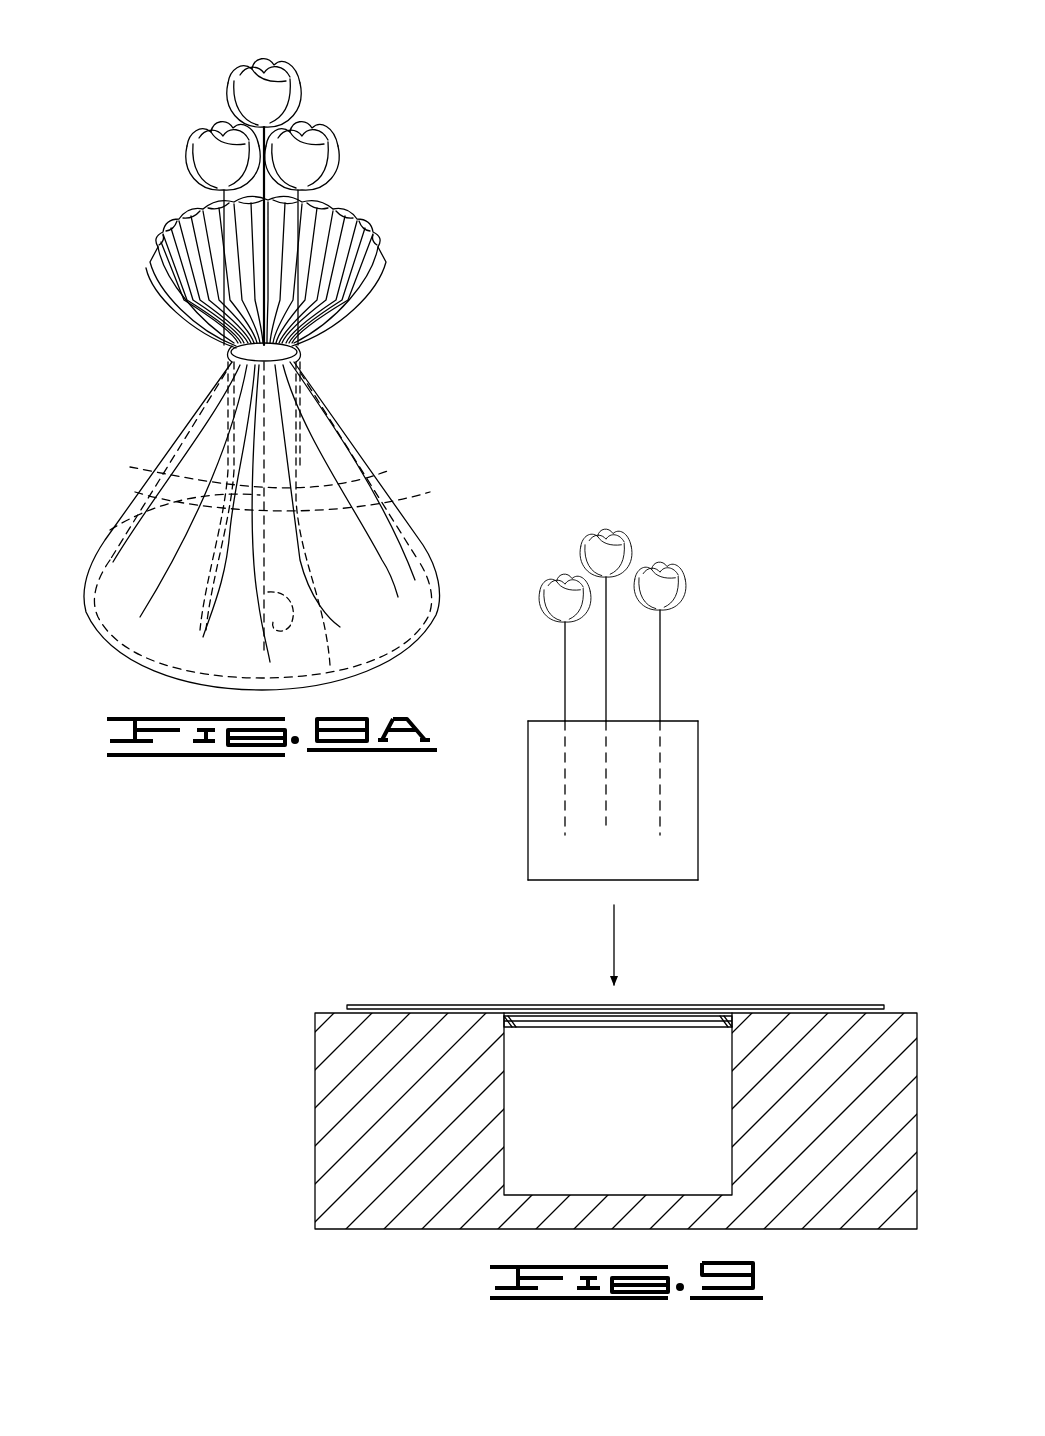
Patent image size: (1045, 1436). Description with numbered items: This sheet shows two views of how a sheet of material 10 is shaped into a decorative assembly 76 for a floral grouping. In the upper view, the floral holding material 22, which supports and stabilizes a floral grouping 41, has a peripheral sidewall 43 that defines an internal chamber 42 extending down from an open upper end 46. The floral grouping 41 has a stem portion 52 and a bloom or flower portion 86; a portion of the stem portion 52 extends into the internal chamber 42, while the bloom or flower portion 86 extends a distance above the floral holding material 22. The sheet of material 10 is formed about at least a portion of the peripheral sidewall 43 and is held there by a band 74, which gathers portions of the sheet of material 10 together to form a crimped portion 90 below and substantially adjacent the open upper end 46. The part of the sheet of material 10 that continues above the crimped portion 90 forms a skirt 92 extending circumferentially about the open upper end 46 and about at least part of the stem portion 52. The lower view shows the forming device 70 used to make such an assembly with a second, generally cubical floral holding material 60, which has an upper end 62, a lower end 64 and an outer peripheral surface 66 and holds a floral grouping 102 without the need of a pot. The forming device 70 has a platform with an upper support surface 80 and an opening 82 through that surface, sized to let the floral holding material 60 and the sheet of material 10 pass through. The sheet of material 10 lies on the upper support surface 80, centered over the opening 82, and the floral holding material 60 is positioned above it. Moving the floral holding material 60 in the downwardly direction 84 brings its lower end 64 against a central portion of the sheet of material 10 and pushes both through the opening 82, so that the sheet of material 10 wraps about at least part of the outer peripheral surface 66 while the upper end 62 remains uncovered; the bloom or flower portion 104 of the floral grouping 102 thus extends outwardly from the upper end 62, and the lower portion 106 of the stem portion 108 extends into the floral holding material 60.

In FIG. 9, the sheet of material 10 is at (798, 998).
In FIG. 8A, the floral holding material 22 is at (382, 478).
In FIG. 8A, the floral grouping 41 is at (309, 190).
In FIG. 8A, the internal chamber 42 is at (135, 492).
In FIG. 8A, the peripheral sidewall 43 is at (130, 467).
In FIG. 8A, the open upper end 46 is at (298, 362).
In FIG. 8A, the stem portion 52 is at (262, 250).
In FIG. 9, the floral holding material 60 is at (645, 797).
In FIG. 9, the upper end 62 is at (544, 720).
In FIG. 9, the lower end 64 is at (546, 881).
In FIG. 9, the outer peripheral surface 66 is at (699, 782).
In FIG. 9, the forming device 70 is at (313, 1080).
In FIG. 8A, the band 74 is at (216, 350).
In FIG. 8A, the decorative assembly 76 is at (275, 432).
In FIG. 9, the upper support surface 80 is at (315, 1012).
In FIG. 9, the opening 82 is at (505, 1100).
In FIG. 9, the downwardly direction 84 is at (613, 940).
In FIG. 8A, the bloom or flower portion 86 is at (292, 66).
In FIG. 8A, the crimped portion 90 is at (300, 356).
In FIG. 8A, the skirt 92 is at (170, 265).
In FIG. 9, the floral grouping 102 is at (639, 682).
In FIG. 9, the bloom or flower portion 104 is at (672, 562).
In FIG. 9, the lower portion 106 is at (565, 816).
In FIG. 9, the stem portion 108 is at (661, 660).